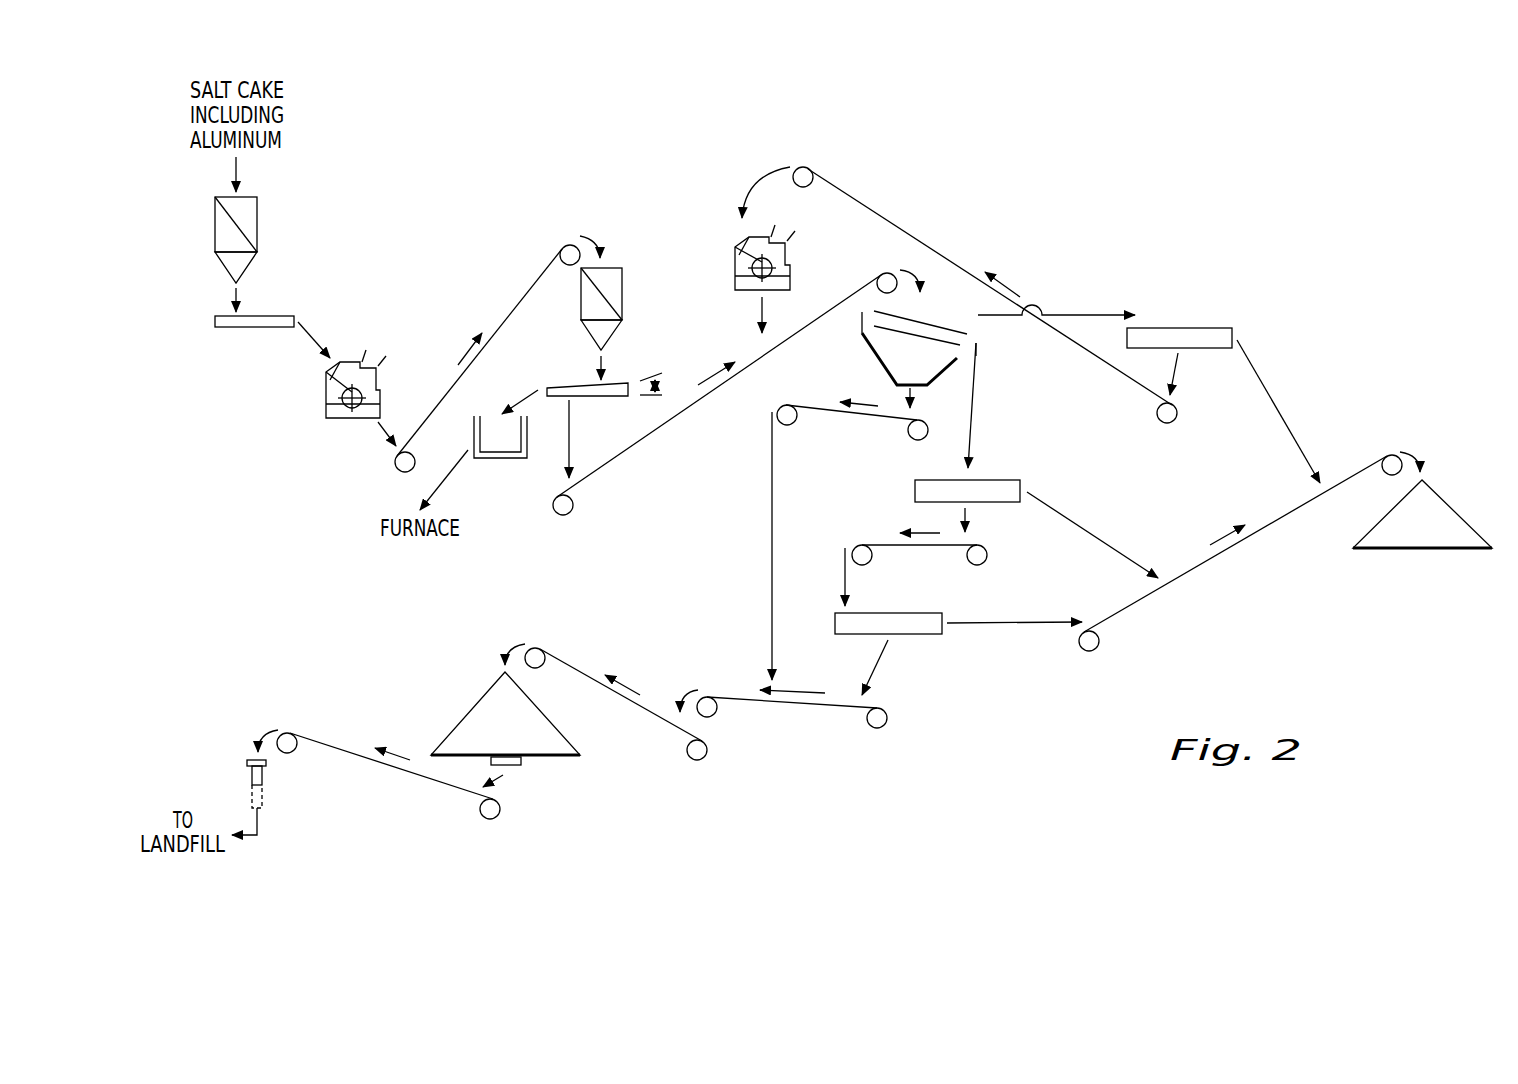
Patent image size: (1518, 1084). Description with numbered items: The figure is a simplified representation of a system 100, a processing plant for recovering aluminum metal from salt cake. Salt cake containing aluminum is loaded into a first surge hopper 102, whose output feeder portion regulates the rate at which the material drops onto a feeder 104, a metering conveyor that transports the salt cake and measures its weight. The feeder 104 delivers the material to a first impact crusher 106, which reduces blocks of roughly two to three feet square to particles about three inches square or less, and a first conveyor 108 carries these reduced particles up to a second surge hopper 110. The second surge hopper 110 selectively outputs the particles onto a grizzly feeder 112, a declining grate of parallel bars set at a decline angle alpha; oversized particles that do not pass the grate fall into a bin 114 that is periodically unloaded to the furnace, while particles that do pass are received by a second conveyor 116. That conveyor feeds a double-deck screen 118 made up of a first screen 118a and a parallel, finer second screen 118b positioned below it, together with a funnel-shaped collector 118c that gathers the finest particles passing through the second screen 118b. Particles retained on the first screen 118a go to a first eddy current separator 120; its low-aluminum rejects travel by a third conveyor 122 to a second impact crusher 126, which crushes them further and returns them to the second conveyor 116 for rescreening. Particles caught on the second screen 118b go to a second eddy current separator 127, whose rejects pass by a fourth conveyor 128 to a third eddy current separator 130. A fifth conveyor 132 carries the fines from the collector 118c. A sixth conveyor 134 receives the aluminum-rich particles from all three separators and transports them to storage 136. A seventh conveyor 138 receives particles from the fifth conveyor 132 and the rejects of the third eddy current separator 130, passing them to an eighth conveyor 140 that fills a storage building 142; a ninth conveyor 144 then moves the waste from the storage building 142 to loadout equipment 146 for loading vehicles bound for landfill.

The system 100 is at (1160, 160).
The first surge hopper 102 is at (215, 225).
The feeder 104 is at (272, 316).
The first impact crusher 106 is at (326, 408).
The first conveyor 108 is at (522, 292).
The second surge hopper 110 is at (622, 292).
The grizzly feeder 112 is at (618, 386).
The bin 114 is at (500, 460).
The second conveyor 116 is at (628, 455).
The double-deck screen 118 is at (949, 372).
The first screen 118a is at (950, 308).
The second screen 118b is at (880, 338).
The collector 118c is at (940, 378).
The first eddy current separator 120 is at (1180, 328).
The third conveyor 122 is at (870, 207).
The second impact crusher 126 is at (790, 262).
The second eddy current separator 127 is at (1005, 480).
The fourth conveyor 128 is at (878, 545).
The third eddy current separator 130 is at (910, 613).
The fifth conveyor 132 is at (800, 405).
The sixth conveyor 134 is at (1358, 470).
The storage 136 is at (1422, 552).
The seventh conveyor 138 is at (730, 697).
The eighth conveyor 140 is at (563, 662).
The storage building 142 is at (470, 710).
The ninth conveyor 144 is at (322, 745).
The loadout equipment 146 is at (248, 764).